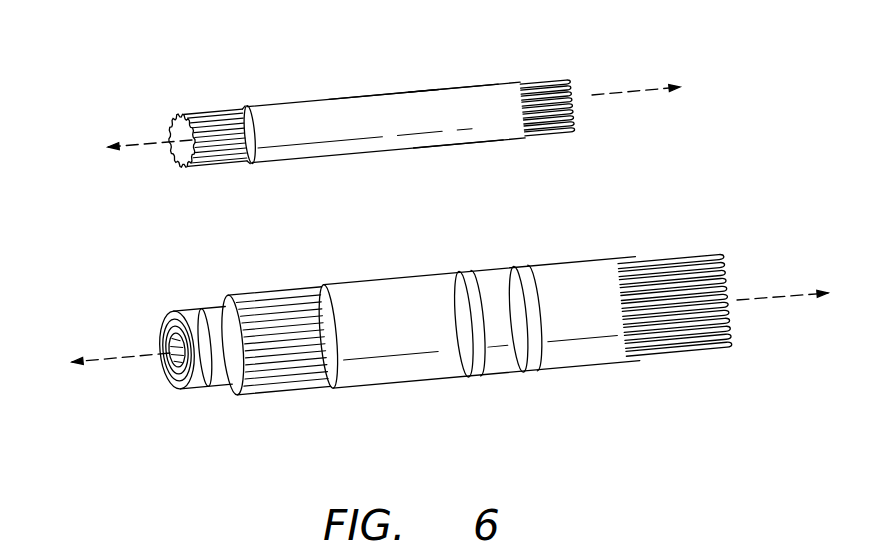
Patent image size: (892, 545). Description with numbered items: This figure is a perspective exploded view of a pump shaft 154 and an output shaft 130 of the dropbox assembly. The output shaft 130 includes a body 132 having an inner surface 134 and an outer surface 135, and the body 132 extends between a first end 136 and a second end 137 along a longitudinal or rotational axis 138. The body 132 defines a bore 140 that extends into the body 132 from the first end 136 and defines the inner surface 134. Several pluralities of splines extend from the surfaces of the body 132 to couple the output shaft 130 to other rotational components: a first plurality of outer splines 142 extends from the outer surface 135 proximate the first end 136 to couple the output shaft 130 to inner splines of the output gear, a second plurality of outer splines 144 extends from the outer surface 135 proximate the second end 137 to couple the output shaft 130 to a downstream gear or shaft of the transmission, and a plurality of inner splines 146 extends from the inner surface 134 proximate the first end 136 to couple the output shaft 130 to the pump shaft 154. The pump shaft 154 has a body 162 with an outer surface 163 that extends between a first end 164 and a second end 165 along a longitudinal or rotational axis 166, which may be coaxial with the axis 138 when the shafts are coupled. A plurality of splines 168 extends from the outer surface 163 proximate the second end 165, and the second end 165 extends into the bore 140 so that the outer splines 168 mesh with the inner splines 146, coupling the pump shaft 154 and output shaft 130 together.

The output shaft 130 is at (688, 208).
The body 132 is at (385, 388).
The inner surface 134 is at (160, 350).
The outer surface 135 is at (422, 362).
The first end 136 is at (160, 312).
The second end 137 is at (733, 268).
The longitudinal or rotational axis 138 is at (763, 300).
The bore 140 is at (160, 348).
The first plurality of outer splines 142 is at (267, 393).
The second plurality of outer splines 144 is at (693, 347).
The plurality of inner splines 146 is at (170, 377).
The pump shaft 154 is at (286, 97).
The body 162 is at (442, 100).
The outer surface 163 is at (374, 106).
The first end 164 is at (172, 115).
The second end 165 is at (582, 82).
The longitudinal or rotational axis 166 is at (636, 90).
The plurality of splines 168 is at (557, 117).